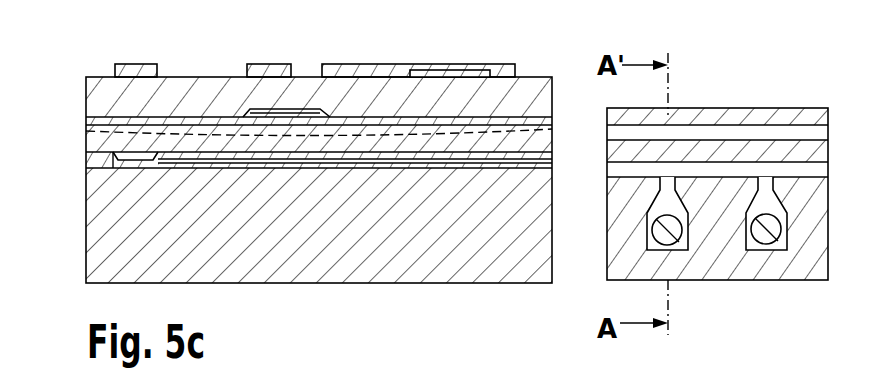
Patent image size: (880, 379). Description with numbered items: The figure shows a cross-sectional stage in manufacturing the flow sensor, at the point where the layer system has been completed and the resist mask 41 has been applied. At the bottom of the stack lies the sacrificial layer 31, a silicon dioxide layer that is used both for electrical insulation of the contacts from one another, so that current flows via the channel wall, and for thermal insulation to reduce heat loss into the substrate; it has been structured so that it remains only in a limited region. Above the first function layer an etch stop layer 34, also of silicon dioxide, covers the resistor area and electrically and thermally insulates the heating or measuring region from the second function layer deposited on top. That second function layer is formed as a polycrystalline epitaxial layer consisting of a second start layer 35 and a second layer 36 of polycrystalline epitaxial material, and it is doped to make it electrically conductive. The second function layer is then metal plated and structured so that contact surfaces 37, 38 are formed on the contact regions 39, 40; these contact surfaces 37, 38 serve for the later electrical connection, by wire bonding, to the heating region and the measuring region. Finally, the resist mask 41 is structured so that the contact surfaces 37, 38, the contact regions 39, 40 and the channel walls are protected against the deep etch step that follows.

The sacrificial layer 31 is at (100, 162).
The etch stop layer 34 is at (298, 115).
The second start layer 35 is at (100, 122).
The second layer 36 is at (100, 94).
The contact surface 37 is at (677, 238).
The contact surface 38 is at (771, 238).
The contact region 39 is at (650, 241).
The contact region 40 is at (750, 246).
The resist mask 41 is at (133, 67).